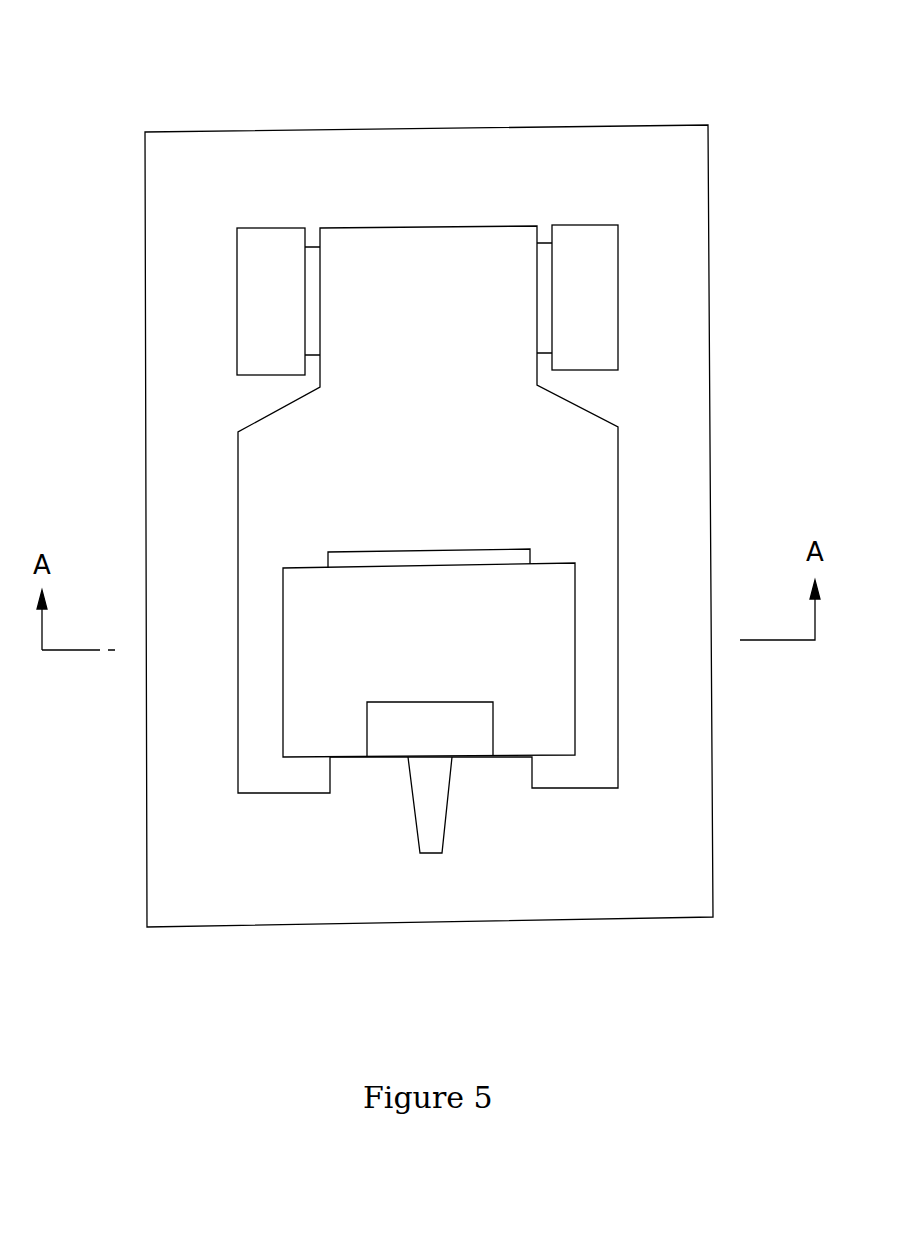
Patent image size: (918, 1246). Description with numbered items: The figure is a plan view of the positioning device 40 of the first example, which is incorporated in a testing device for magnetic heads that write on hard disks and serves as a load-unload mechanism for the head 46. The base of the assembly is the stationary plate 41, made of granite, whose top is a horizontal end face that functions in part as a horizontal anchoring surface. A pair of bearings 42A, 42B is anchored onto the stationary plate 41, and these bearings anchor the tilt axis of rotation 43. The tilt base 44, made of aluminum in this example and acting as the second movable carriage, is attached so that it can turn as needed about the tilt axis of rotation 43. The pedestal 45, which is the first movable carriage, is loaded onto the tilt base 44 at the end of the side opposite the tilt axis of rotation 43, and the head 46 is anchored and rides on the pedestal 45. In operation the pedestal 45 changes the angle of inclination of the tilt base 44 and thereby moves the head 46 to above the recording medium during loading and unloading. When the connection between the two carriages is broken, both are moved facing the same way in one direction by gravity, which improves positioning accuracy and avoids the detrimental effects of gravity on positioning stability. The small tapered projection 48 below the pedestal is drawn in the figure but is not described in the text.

The positioning device 40 is at (432, 38).
The stationary plate 41 is at (543, 187).
The bearing 42A is at (260, 330).
The bearing 42B is at (585, 313).
The tilt axis of rotation 43 is at (307, 295).
The tilt base 44 is at (305, 470).
The pedestal 45 is at (537, 688).
The head 46 is at (468, 733).
The pole tip 48 is at (432, 805).